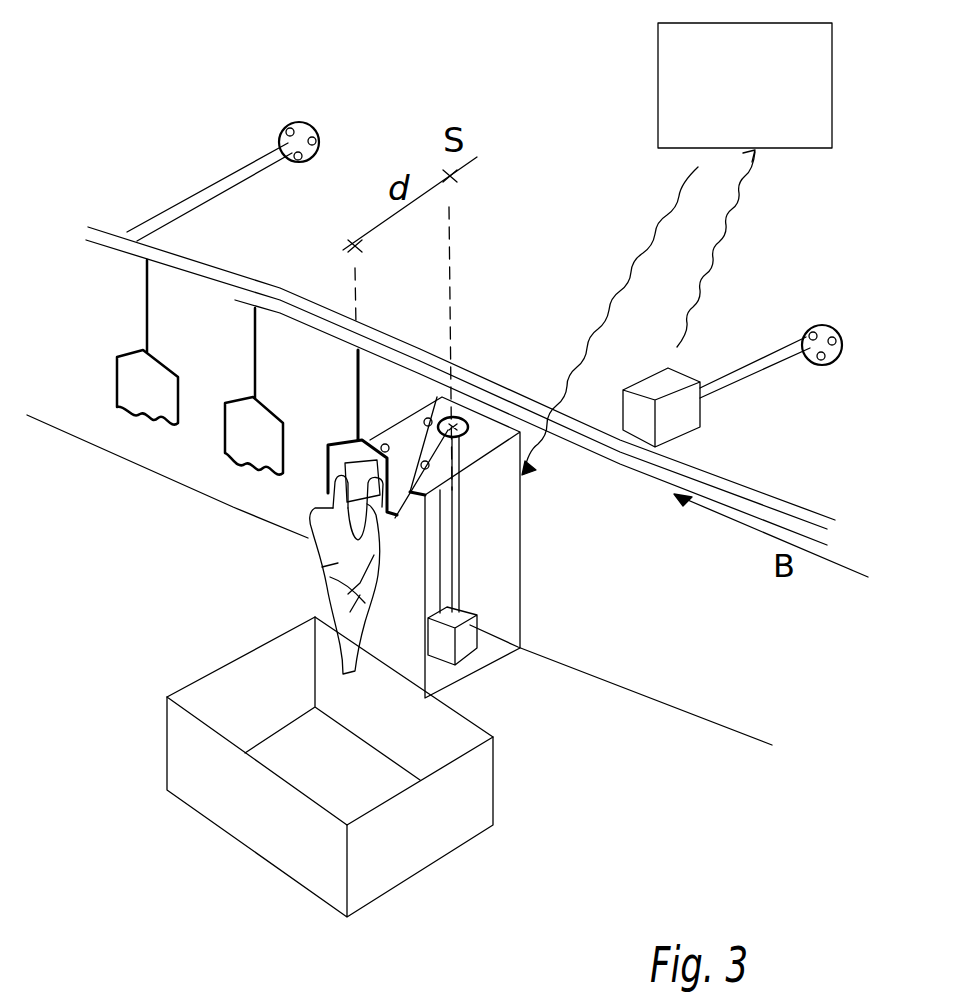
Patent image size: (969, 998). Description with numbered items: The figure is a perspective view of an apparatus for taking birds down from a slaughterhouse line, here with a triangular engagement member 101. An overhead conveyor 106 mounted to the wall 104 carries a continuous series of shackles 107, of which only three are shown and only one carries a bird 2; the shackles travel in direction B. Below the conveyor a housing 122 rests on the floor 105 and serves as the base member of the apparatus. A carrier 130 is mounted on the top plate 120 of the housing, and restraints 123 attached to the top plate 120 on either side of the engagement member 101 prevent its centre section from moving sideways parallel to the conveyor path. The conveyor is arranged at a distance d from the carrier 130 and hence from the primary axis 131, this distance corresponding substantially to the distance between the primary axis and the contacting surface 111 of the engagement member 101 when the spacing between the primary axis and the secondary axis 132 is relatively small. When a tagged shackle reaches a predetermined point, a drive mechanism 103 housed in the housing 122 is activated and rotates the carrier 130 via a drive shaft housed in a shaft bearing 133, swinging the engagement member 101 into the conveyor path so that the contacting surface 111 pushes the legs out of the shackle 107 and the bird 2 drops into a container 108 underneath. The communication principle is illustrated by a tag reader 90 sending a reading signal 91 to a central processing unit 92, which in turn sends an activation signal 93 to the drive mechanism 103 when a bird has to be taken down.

The bird 2 is at (333, 567).
The tag reader 90 is at (678, 418).
The reading signal 91 is at (719, 248).
The central processing unit 92 is at (775, 101).
The activation signal 93 is at (610, 321).
The engagement member 101 is at (413, 447).
The drive mechanism 103 is at (483, 657).
The wall 104 is at (240, 146).
The floor 105 is at (122, 762).
The overhead conveyor 106 is at (114, 230).
The shackle 107 is at (253, 473).
The container 108 is at (277, 853).
The contacting surface 111 is at (397, 520).
The top plate 120 is at (495, 433).
The housing 122 is at (519, 611).
The restraints 123 is at (360, 435).
The carrier 130 is at (467, 420).
The primary axis 131 is at (440, 425).
The secondary axis 132 is at (433, 440).
The shaft bearing 133 is at (455, 533).